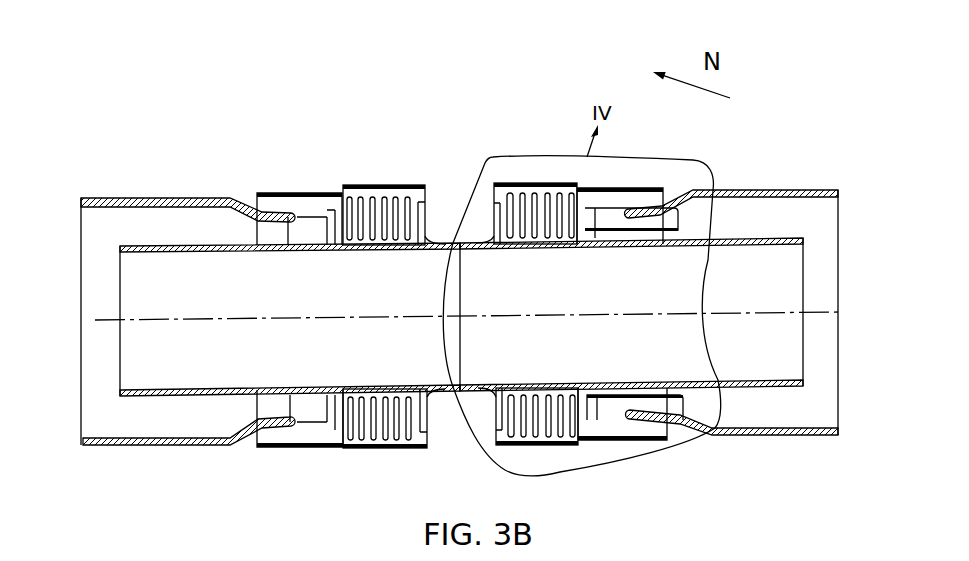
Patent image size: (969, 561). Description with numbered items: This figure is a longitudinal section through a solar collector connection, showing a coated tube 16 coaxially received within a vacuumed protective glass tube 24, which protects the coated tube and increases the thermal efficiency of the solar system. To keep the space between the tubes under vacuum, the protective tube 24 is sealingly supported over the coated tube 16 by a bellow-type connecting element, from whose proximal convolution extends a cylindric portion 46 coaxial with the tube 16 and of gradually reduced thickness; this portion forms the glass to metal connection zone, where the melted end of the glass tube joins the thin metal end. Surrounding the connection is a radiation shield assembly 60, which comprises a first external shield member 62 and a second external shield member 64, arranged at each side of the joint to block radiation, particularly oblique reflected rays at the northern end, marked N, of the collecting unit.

The coated tube 16 is at (147, 247).
The protective glass tube 24 is at (177, 199).
The cylindric portion 46 is at (303, 195).
The radiation shield assembly 60 is at (314, 98).
The first external shield member 62 is at (385, 185).
The second external shield member 64 is at (282, 193).